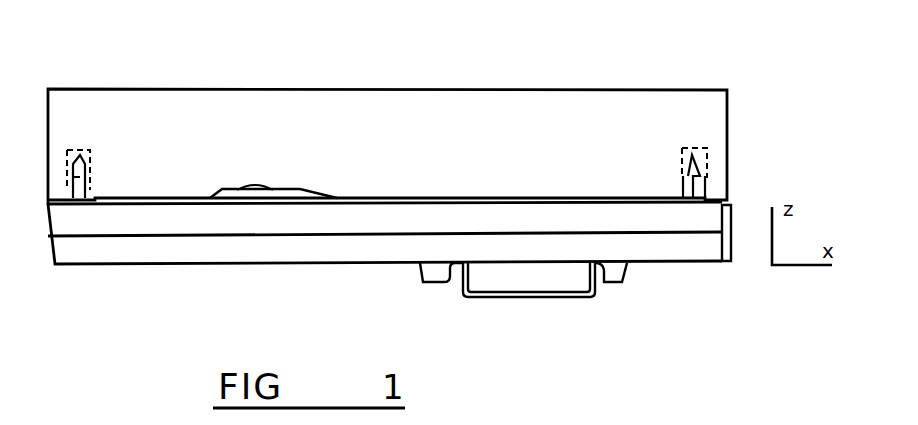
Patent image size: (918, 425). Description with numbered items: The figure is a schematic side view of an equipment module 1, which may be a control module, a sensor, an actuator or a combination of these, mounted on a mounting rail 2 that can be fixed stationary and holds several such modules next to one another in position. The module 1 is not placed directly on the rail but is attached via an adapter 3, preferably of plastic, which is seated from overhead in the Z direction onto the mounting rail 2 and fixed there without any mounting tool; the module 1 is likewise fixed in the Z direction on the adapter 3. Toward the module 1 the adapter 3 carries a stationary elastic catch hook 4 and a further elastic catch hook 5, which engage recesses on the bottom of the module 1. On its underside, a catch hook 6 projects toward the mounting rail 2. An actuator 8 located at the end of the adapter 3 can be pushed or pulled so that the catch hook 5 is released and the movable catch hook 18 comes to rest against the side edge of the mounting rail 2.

The equipment module 1 is at (517, 88).
The mounting rail 2 is at (560, 302).
The adapter 3 is at (700, 224).
The catch hook 4 is at (92, 168).
The catch hook 5 is at (670, 158).
The catch hook 6 is at (620, 276).
The actuator 8 is at (732, 250).
The movable catch hook 18 is at (419, 268).